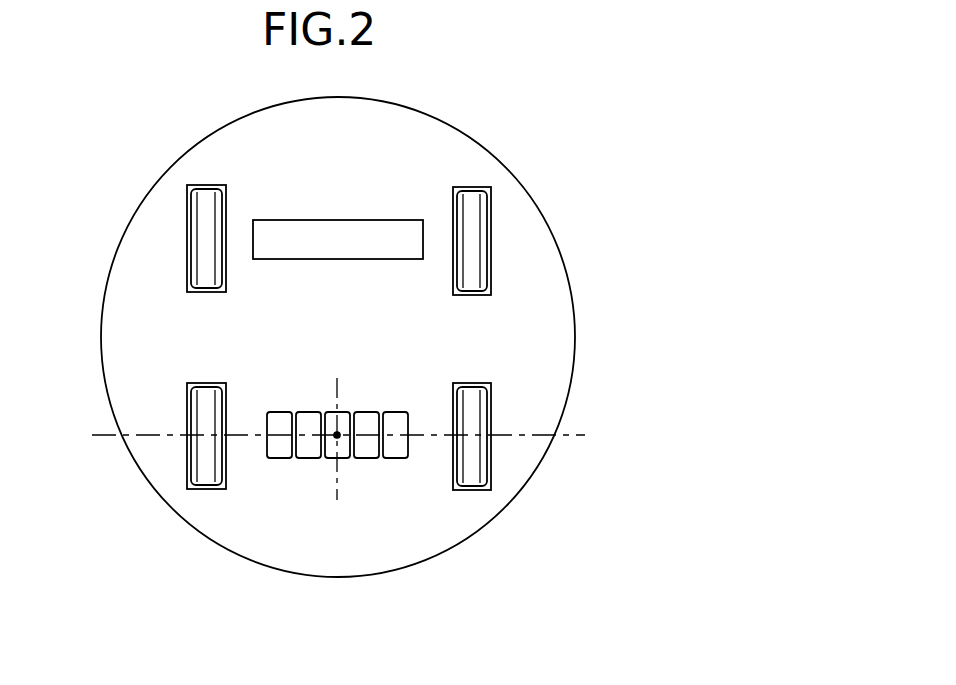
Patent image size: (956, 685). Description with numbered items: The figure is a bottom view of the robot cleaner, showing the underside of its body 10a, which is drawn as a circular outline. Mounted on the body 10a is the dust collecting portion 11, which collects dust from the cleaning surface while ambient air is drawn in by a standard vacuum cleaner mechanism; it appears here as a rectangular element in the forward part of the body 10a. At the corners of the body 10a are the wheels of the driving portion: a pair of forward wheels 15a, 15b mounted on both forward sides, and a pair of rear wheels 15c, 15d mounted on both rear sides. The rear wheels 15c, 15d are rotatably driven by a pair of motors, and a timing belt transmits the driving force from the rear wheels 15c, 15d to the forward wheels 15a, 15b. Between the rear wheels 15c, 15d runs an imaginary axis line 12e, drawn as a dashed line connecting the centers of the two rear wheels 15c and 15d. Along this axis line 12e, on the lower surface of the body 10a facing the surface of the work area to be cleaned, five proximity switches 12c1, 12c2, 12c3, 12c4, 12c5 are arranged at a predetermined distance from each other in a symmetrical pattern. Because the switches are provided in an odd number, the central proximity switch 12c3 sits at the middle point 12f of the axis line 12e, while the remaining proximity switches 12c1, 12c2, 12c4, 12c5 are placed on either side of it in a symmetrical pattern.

The body 10a is at (572, 297).
The dust collecting portion 11 is at (389, 220).
The proximity switch 12c1 is at (280, 458).
The proximity switch 12c2 is at (308, 458).
The proximity switch 12c3 is at (338, 458).
The proximity switch 12c4 is at (365, 458).
The proximity switch 12c5 is at (395, 458).
The axis line 12e is at (531, 437).
The middle point 12f is at (338, 434).
The forward wheel 15a is at (200, 222).
The forward wheel 15b is at (477, 225).
The rear wheel 15c is at (200, 458).
The rear wheel 15d is at (475, 466).